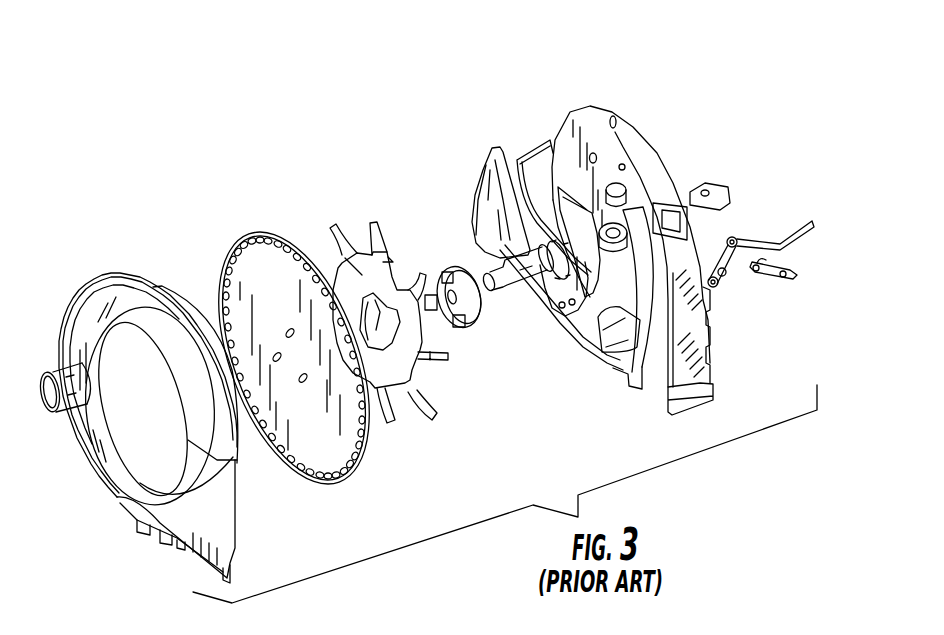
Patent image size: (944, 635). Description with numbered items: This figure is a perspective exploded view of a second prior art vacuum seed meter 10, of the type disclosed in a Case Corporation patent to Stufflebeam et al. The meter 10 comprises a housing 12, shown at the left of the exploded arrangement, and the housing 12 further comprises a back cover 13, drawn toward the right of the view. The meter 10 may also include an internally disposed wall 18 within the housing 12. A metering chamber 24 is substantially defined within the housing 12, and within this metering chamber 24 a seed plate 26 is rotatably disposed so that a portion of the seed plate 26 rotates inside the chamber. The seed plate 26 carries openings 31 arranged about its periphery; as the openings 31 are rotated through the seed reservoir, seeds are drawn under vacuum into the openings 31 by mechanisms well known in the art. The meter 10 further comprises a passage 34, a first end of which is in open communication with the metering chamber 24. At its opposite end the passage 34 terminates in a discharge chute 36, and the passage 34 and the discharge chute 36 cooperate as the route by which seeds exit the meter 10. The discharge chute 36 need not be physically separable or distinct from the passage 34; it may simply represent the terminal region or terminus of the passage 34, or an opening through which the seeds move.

The seed meter 10 is at (130, 186).
The housing 12 is at (590, 322).
The back cover 13 is at (568, 132).
The internally disposed wall 18 is at (653, 315).
The metering chamber 24 is at (638, 265).
The seed plate 26 is at (318, 445).
The openings 31 is at (365, 420).
The passage 34 is at (640, 182).
The discharge chute 36 is at (654, 406).